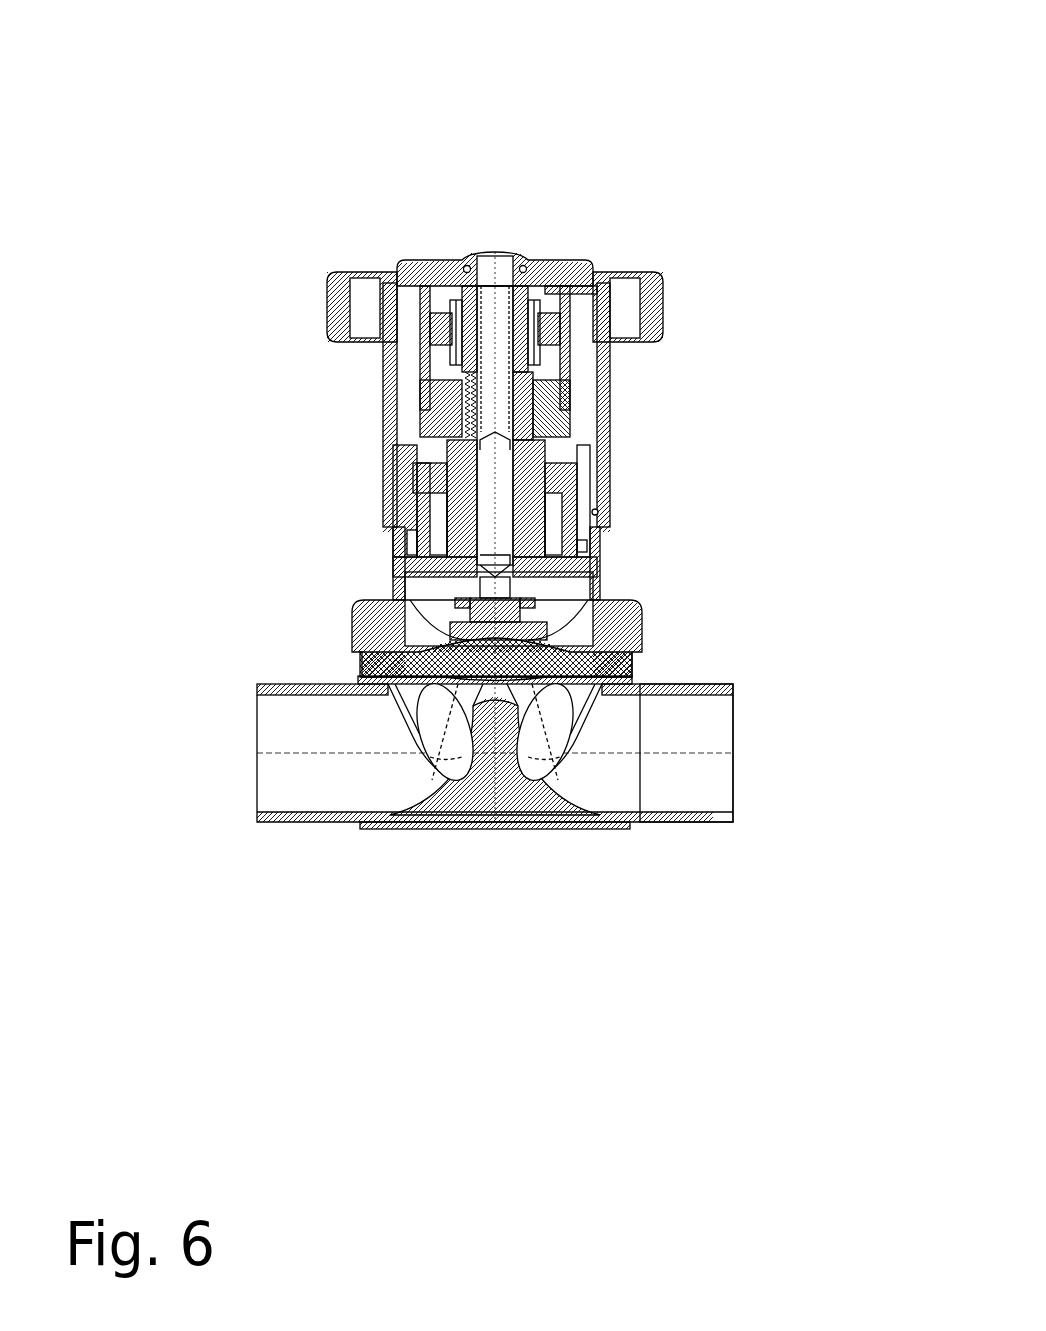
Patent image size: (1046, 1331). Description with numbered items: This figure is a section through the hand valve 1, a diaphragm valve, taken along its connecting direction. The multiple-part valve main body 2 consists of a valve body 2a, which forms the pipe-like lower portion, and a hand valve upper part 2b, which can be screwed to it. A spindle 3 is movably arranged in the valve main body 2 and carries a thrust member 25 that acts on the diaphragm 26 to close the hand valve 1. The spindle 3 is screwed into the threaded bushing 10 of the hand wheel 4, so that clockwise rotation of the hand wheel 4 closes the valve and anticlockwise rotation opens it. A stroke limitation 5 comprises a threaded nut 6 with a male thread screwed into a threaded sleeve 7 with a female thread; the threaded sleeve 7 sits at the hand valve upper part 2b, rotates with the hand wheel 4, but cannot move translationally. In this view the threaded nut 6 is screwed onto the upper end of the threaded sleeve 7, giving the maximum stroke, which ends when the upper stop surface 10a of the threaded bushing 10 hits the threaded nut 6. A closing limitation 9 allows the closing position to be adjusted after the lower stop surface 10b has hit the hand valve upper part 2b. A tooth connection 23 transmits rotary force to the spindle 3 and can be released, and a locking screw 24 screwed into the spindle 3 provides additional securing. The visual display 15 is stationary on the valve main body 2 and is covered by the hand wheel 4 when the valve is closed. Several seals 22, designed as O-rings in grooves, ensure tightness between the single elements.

The hand valve 1 is at (253, 75).
The valve main body 2 is at (272, 665).
The valve body 2a is at (672, 693).
The hand valve upper part 2b is at (387, 637).
The spindle 3 is at (499, 522).
The hand wheel 4 is at (660, 298).
The stroke limitation 5 is at (428, 309).
The threaded nut 6 is at (550, 333).
The threaded sleeve 7 is at (428, 353).
The closing limitation 9 is at (446, 457).
The threaded bushing 10 is at (540, 428).
The upper stop surface 10a is at (468, 435).
The lower stop surface 10b is at (462, 382).
The visual display 15 is at (403, 478).
The seals 22 is at (527, 266).
The tooth connection 23 is at (573, 280).
The locking screw 24 is at (505, 256).
The thrust member 25 is at (532, 612).
The diaphragm 26 is at (613, 662).